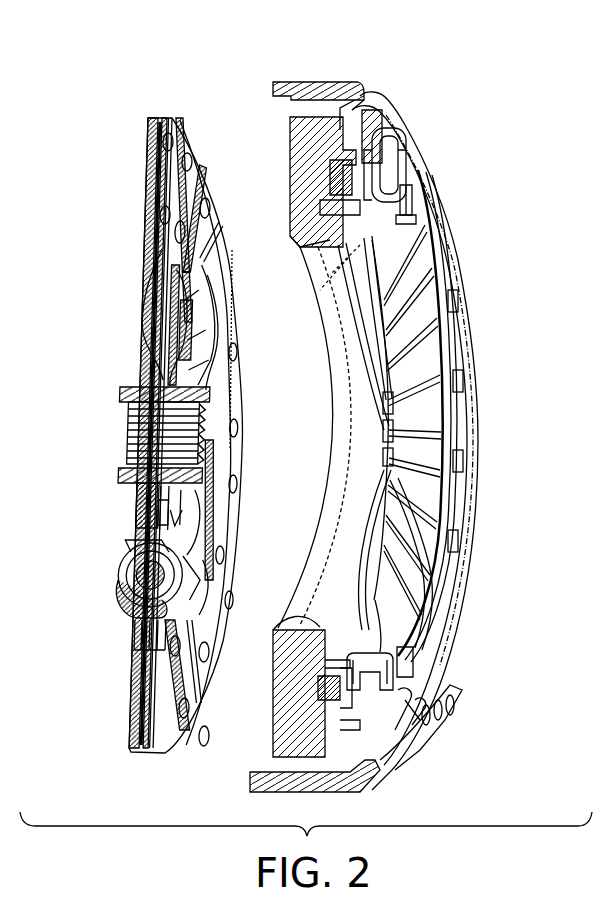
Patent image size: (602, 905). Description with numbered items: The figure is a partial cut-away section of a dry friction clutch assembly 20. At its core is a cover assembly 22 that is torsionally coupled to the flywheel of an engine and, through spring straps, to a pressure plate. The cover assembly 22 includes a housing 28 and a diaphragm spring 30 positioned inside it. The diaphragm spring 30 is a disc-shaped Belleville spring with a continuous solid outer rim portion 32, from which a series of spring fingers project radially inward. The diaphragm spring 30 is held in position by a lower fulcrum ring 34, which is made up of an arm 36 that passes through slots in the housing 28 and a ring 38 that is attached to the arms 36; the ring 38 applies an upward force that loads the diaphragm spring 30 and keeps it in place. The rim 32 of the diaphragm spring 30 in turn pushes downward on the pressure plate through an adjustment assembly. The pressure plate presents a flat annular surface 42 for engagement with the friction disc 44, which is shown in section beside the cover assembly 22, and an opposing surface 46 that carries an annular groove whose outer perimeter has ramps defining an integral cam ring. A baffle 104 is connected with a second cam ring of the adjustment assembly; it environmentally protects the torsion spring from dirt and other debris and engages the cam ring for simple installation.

The dry friction clutch assembly 20 is at (428, 79).
The cover assembly 22 is at (450, 230).
The housing 28 is at (420, 358).
The diaphragm spring 30 is at (413, 543).
The outer rim portion 32 is at (378, 163).
The lower fulcrum ring 34 is at (350, 250).
The arm 36 is at (413, 200).
The ring 38 is at (347, 210).
The flat annular surface 42 is at (300, 727).
The friction disc 44 is at (190, 131).
The opposing surface 46 is at (318, 577).
The baffle 104 is at (312, 692).